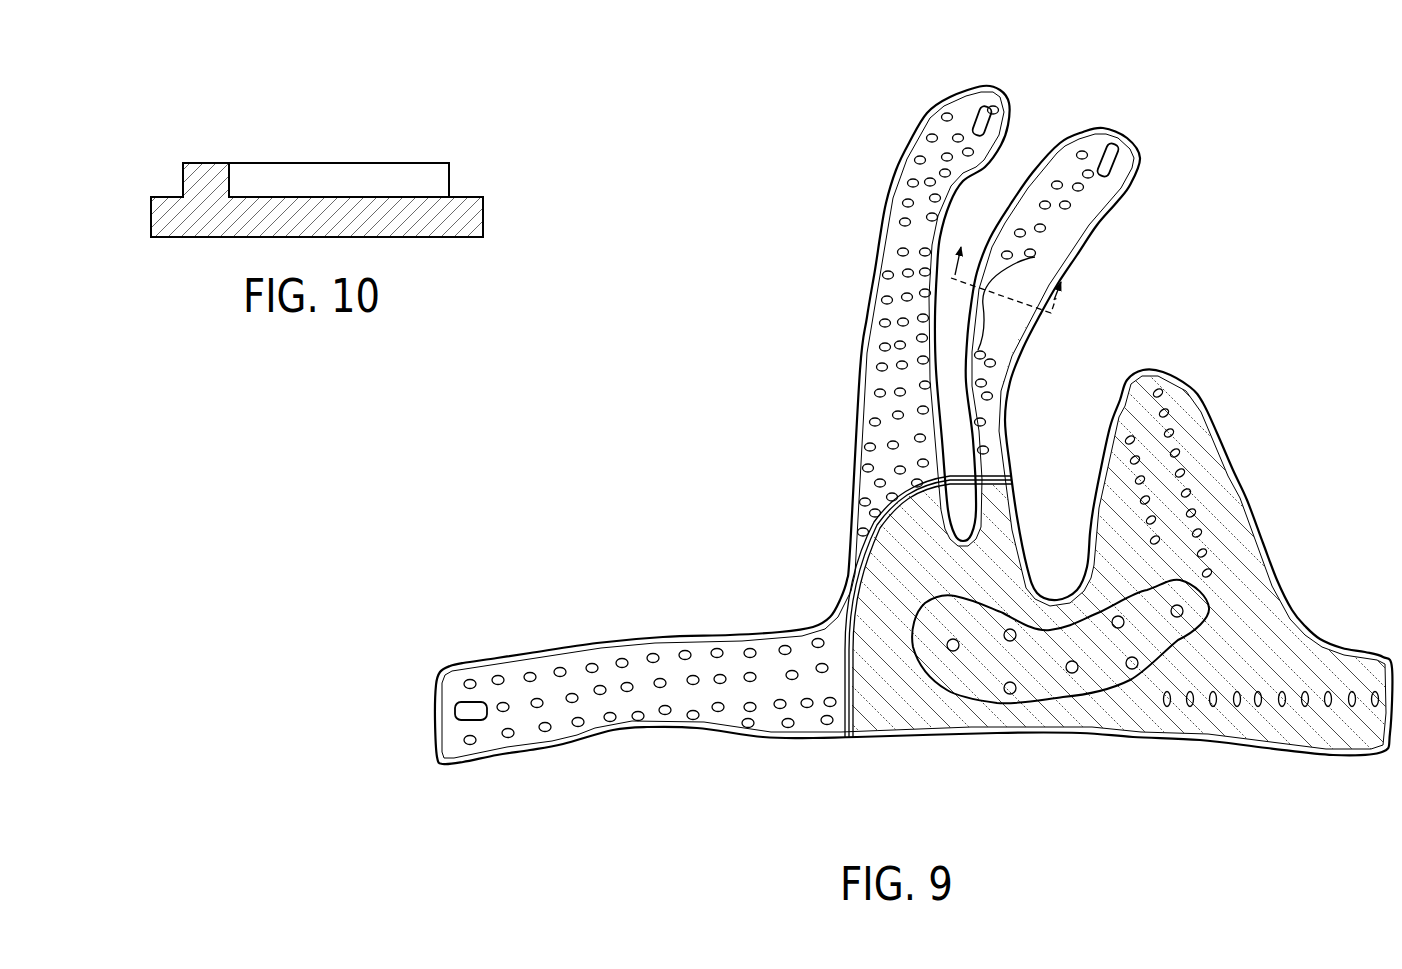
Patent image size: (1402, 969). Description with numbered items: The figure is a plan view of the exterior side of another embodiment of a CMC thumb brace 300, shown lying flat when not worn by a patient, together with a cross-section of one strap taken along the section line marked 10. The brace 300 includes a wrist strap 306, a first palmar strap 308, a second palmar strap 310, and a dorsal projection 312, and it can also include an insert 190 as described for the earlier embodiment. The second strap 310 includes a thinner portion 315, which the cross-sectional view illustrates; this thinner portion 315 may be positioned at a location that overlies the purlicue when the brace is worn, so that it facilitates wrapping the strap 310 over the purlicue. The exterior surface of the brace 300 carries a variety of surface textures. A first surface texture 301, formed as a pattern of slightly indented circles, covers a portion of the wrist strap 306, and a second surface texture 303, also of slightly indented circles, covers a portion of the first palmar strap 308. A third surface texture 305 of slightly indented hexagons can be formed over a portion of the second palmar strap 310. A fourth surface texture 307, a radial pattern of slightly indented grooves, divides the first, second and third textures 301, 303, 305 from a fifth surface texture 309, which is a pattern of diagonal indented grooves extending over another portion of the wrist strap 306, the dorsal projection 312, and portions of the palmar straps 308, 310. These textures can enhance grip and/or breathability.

In FIG. 9, the CMC thumb brace 300 is at (1336, 146).
In FIG. 10, the CMC thumb brace 300 is at (526, 99).
In FIG. 9, the first surface texture 301 is at (642, 672).
In FIG. 9, the second surface texture 303 is at (870, 360).
In FIG. 9, the third surface texture 305 is at (982, 410).
In FIG. 9, the wrist strap 306 is at (1272, 723).
In FIG. 9, the fourth surface texture 307 is at (1007, 481).
In FIG. 9, the first palmar strap 308 is at (890, 250).
In FIG. 9, the fifth surface texture 309 is at (990, 590).
In FIG. 9, the second palmar strap 310 is at (1073, 195).
In FIG. 10, the second palmar strap 310 is at (201, 162).
In FIG. 9, the dorsal projection 312 is at (1209, 461).
In FIG. 9, the thinner portion 315 is at (1007, 322).
In FIG. 10, the thinner portion 315 is at (378, 205).
In FIG. 9, the insert 190 is at (1050, 677).
In FIG. 9, the section view indicator for FIG. 10 is at (1028, 258).